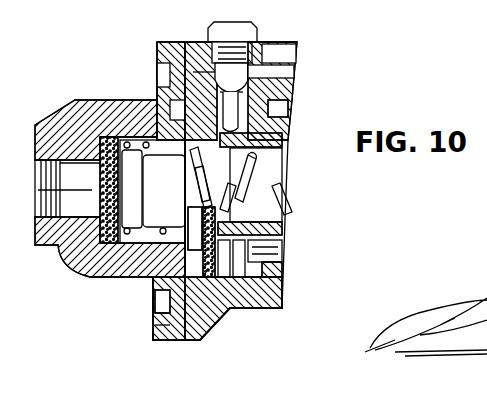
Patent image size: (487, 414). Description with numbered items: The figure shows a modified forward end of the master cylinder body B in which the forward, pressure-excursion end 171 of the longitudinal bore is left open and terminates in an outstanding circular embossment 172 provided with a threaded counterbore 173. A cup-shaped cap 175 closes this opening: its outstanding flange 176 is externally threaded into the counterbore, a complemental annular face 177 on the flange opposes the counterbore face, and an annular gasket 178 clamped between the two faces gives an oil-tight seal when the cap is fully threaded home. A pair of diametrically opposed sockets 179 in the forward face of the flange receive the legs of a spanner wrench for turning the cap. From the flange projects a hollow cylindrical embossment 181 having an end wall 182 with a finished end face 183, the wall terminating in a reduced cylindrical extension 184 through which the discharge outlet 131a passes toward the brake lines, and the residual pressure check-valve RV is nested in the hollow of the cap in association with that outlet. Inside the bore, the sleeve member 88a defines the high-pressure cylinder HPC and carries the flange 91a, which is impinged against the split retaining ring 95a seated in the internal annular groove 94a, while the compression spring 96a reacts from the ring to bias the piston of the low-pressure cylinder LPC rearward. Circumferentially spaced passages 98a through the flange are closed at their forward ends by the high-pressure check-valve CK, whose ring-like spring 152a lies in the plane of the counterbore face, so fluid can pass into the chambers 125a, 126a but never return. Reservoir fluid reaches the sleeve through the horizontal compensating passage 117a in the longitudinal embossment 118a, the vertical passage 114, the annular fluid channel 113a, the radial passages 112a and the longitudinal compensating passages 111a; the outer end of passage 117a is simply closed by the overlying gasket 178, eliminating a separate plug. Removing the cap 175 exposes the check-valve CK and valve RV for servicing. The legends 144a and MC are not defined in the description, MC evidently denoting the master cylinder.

The threaded counterbore 173 is at (160, 28).
The vertical passage 114 is at (285, 2).
The longitudinal embossment 118a is at (283, 44).
The low-pressure cylinder LPC is at (272, 91).
The horizontal compensating passage 117a is at (160, 63).
The cup-shaped cap 175 is at (153, 100).
The complemental annular face 177 is at (147, 100).
The finished end face 183 is at (80, 137).
The reduced cylindrical extension 184 is at (58, 107).
The passage 144a is at (141, 124).
The chamber 126a is at (154, 187).
The radially disposed passages 112a is at (204, 211).
The discharge outlet 131a is at (77, 202).
The residual pressure check-valve RV is at (168, 204).
The high-pressure check-valve CK is at (254, 220).
The circumferentially spaced passages 98a is at (280, 188).
The high-pressure cylinder HPC is at (250, 249).
The sleeve member 88a is at (278, 115).
The internal annular groove 94a is at (232, 71).
The sleeve flange 91a is at (219, 91).
The chamber 125a is at (183, 242).
The end wall 182 is at (63, 262).
The hollow cylindrical embossment 181 is at (80, 278).
The master cylinder body B is at (147, 286).
The sockets 179 is at (157, 303).
The outstanding flange 176 is at (157, 327).
The circular embossment 172 is at (152, 342).
The annular gasket 178 is at (227, 320).
The forward end of bore 171 is at (170, 345).
The annular fluid channel 113a is at (212, 320).
The split retaining ring 95a is at (238, 308).
The ring-like spring 152a is at (236, 326).
The compression spring 96a is at (262, 315).
The longitudinal compensating passages 111a is at (282, 300).
The master cylinder connection MC is at (238, 345).